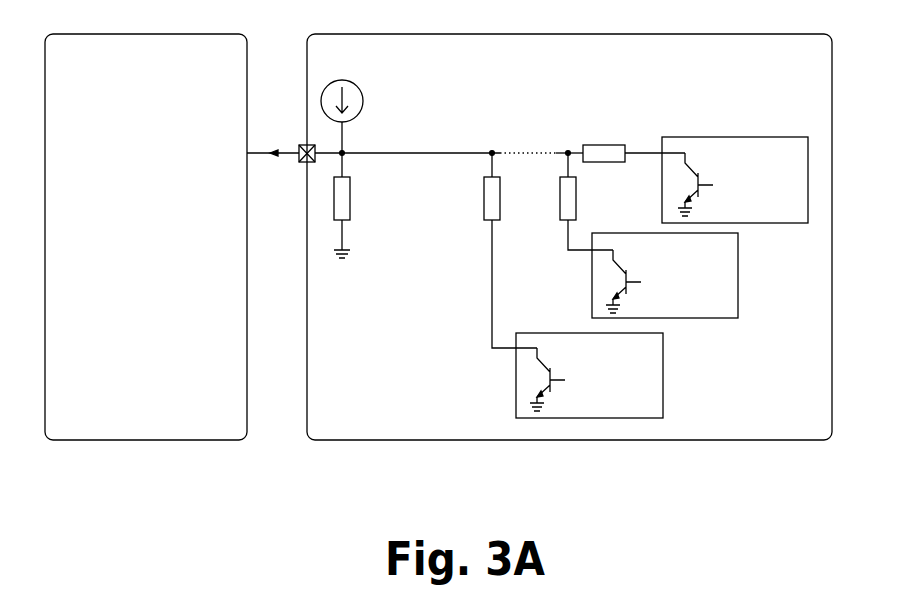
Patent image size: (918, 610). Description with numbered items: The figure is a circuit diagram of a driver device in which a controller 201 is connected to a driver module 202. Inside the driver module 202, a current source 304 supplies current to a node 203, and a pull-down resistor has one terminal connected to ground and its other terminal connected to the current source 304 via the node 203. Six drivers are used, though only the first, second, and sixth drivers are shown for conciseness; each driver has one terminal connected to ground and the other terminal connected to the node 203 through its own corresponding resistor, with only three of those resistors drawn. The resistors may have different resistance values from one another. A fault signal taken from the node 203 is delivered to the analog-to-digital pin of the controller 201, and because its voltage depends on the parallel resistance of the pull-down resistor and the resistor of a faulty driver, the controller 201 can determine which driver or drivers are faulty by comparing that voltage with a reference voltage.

The controller 201 is at (146, 237).
The driver module 202 is at (539, 237).
The node 203 is at (449, 163).
The current source 304 is at (383, 97).